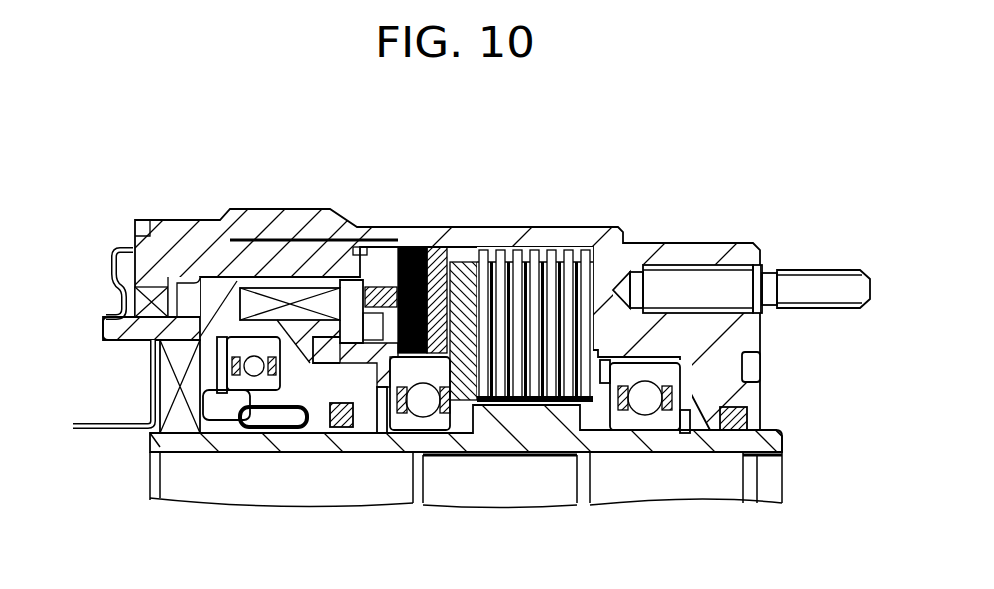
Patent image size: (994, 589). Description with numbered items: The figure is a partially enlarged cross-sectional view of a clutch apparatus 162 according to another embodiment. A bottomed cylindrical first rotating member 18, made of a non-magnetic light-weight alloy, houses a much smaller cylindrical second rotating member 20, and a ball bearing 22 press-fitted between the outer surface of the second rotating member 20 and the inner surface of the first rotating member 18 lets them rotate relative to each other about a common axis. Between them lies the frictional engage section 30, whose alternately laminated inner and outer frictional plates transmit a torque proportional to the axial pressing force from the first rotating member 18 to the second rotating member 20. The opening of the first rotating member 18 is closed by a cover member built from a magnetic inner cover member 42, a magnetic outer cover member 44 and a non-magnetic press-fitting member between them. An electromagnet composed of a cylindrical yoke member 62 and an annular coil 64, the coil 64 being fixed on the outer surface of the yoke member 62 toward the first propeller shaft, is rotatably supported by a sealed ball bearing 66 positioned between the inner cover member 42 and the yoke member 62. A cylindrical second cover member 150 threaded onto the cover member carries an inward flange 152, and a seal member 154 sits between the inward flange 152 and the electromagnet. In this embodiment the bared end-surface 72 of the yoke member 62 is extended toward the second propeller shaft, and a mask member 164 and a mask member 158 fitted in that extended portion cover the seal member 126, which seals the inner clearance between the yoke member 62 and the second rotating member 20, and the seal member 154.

The clutch apparatus 162 is at (464, 340).
The second cover member 150 is at (207, 227).
The inward flange 152 is at (147, 235).
The seal member 154 is at (155, 293).
The mask member 158 is at (115, 267).
The bared end-surface 72 is at (103, 332).
The yoke member 62 is at (113, 333).
The mask member 164 is at (128, 428).
The seal member 126 is at (158, 443).
The outer cover member 44 is at (313, 237).
The coil 64 is at (337, 307).
The frictional engage section 30 is at (554, 230).
The first rotating member 18 is at (713, 252).
The second rotating member 20 is at (770, 442).
The sealed ball bearing 66 is at (247, 385).
The inner cover member 42 is at (317, 425).
The ball bearing 22 is at (653, 427).